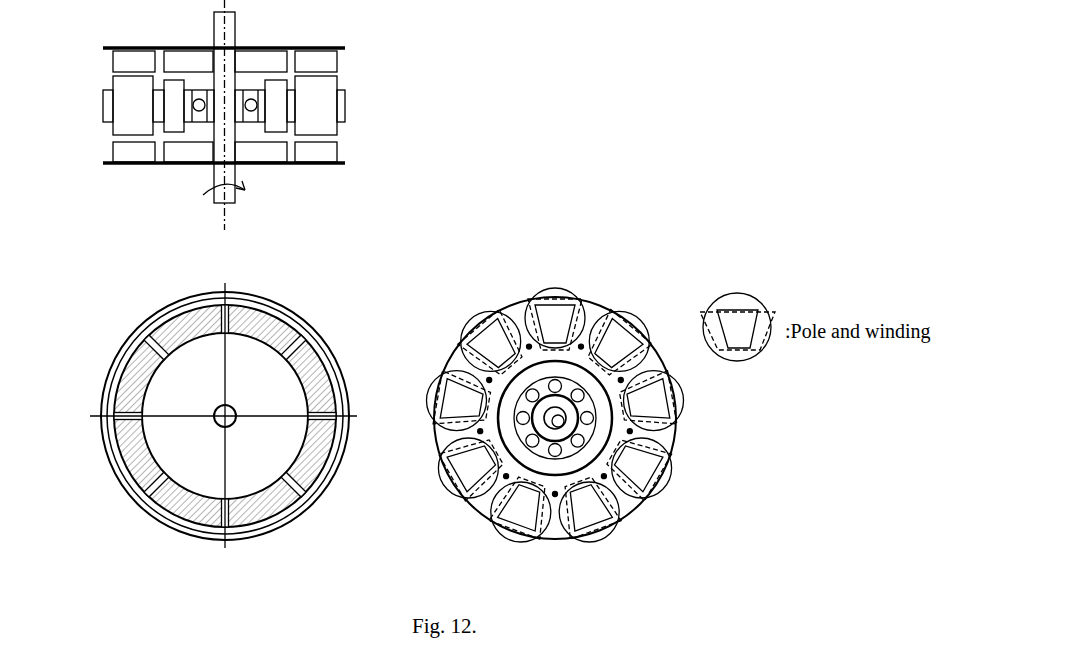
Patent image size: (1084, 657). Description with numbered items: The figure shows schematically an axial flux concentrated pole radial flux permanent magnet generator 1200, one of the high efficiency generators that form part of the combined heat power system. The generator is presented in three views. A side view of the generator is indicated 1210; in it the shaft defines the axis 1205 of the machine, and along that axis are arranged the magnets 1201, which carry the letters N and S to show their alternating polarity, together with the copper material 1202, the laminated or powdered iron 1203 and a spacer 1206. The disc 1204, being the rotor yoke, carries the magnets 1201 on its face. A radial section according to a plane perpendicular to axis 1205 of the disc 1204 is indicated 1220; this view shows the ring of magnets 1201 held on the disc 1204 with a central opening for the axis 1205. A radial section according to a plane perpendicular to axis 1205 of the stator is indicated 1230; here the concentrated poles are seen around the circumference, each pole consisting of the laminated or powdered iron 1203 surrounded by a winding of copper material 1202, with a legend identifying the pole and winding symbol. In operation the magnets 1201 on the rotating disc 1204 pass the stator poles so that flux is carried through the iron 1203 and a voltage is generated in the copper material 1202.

The axial flux concentrated pole radial flux permanent magnet generator 1200 is at (614, 29).
The side view of the generator 1210 is at (504, 79).
The radial section of a disc 1220 is at (266, 542).
The radial section of the stator 1230 is at (678, 489).
The magnets 1201 is at (325, 153).
The copper material 1202 is at (343, 100).
The laminated or powdered iron 1203 is at (315, 110).
The disc 1204 is at (343, 48).
The axis 1205 is at (225, 220).
The spacer 1206 is at (275, 90).